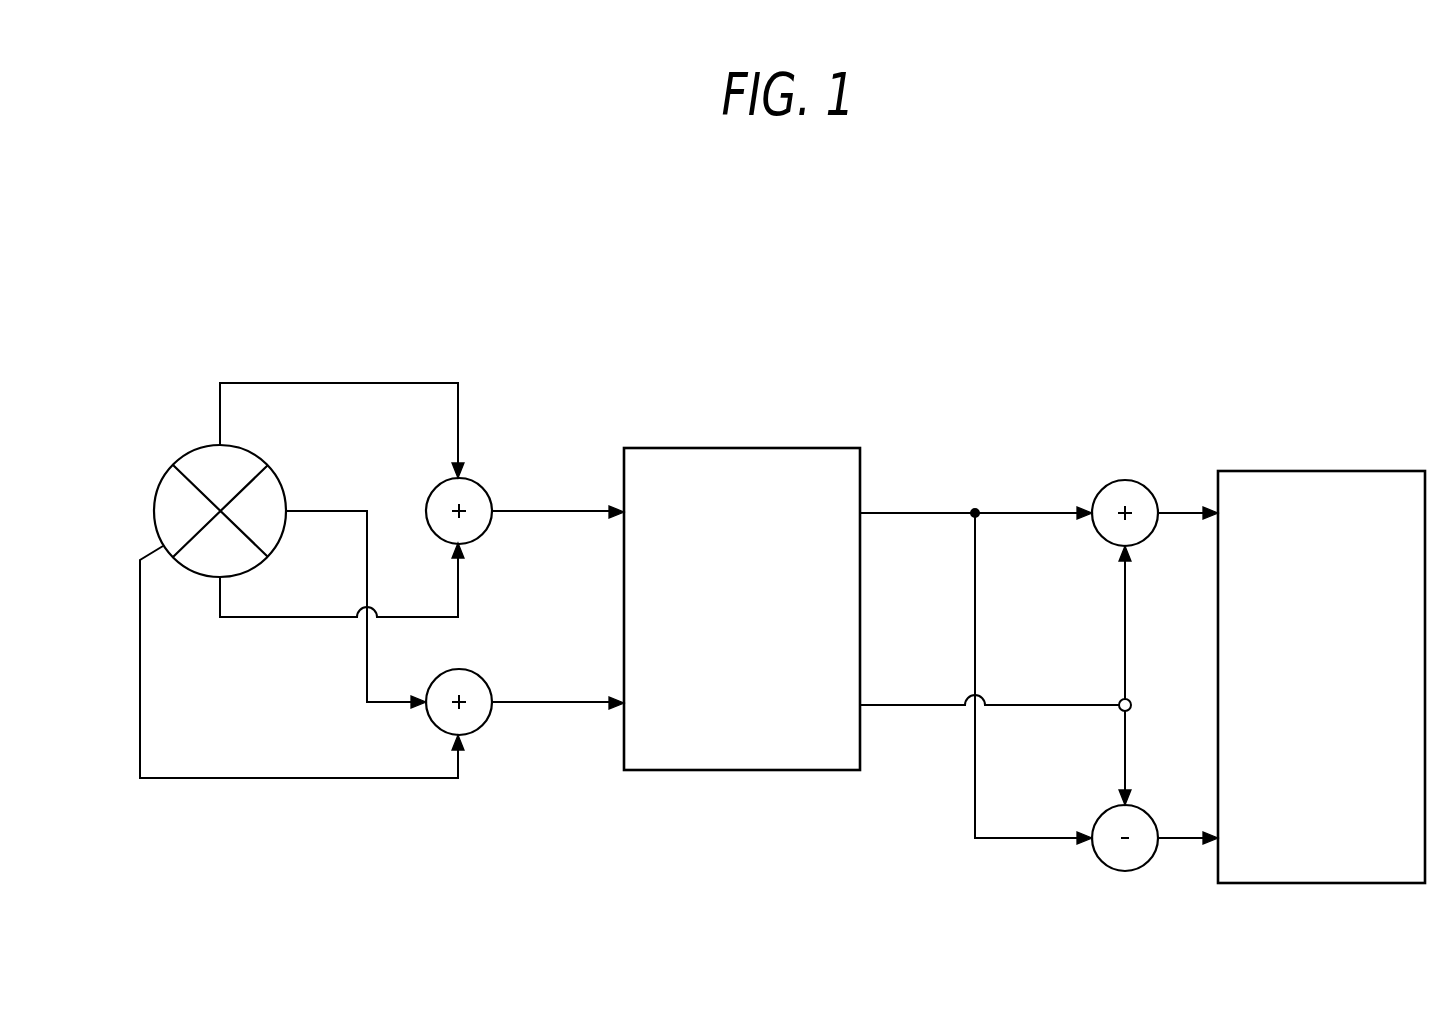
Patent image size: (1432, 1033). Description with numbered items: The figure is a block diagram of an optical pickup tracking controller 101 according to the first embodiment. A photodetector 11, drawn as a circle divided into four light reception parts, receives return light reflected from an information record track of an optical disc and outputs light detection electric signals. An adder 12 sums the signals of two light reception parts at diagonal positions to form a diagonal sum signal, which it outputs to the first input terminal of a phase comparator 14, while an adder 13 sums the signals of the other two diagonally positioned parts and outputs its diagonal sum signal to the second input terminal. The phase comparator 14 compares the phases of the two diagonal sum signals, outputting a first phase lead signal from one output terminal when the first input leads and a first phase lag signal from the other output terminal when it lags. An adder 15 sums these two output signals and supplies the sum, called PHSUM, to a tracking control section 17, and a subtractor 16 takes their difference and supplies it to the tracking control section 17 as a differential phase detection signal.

The optical pickup tracking controller 101 is at (502, 302).
The photodetector 11 is at (186, 456).
The adder 12 is at (483, 487).
The adder 13 is at (483, 677).
The phase comparator 14 is at (740, 448).
The adder 15 is at (1103, 491).
The subtractor 16 is at (1103, 814).
The tracking control section 17 is at (1321, 471).